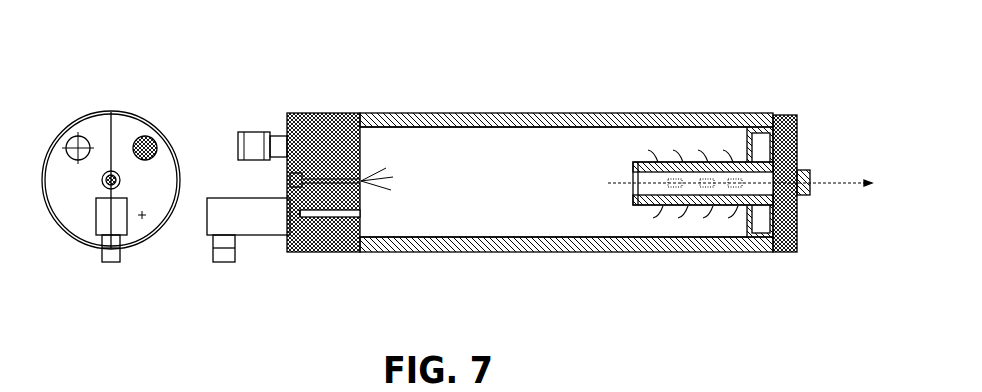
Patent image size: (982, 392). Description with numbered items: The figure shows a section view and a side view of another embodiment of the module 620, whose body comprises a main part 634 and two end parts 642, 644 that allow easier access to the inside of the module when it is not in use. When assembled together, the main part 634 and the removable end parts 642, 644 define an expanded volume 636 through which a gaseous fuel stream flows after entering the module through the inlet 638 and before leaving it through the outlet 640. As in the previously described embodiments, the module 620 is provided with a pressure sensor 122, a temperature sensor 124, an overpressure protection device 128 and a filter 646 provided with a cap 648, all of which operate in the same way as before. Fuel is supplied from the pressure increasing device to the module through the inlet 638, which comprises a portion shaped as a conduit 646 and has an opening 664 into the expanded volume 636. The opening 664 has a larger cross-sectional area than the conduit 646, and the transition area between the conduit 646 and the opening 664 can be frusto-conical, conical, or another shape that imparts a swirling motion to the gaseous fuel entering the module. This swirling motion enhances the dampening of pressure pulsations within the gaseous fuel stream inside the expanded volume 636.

The module 620 is at (579, 155).
The main part 634 is at (548, 113).
The expanded volume 636 is at (623, 140).
The end part 642 is at (336, 113).
The inlet 638 is at (289, 178).
The end part 644 is at (785, 118).
The outlet 640 is at (808, 183).
The conduit 646 is at (318, 252).
The cap 648 is at (635, 204).
The opening 664 is at (361, 182).
The pressure sensor 122 is at (73, 140).
The temperature sensor 124 is at (160, 134).
The overpressure protection device 128 is at (220, 220).